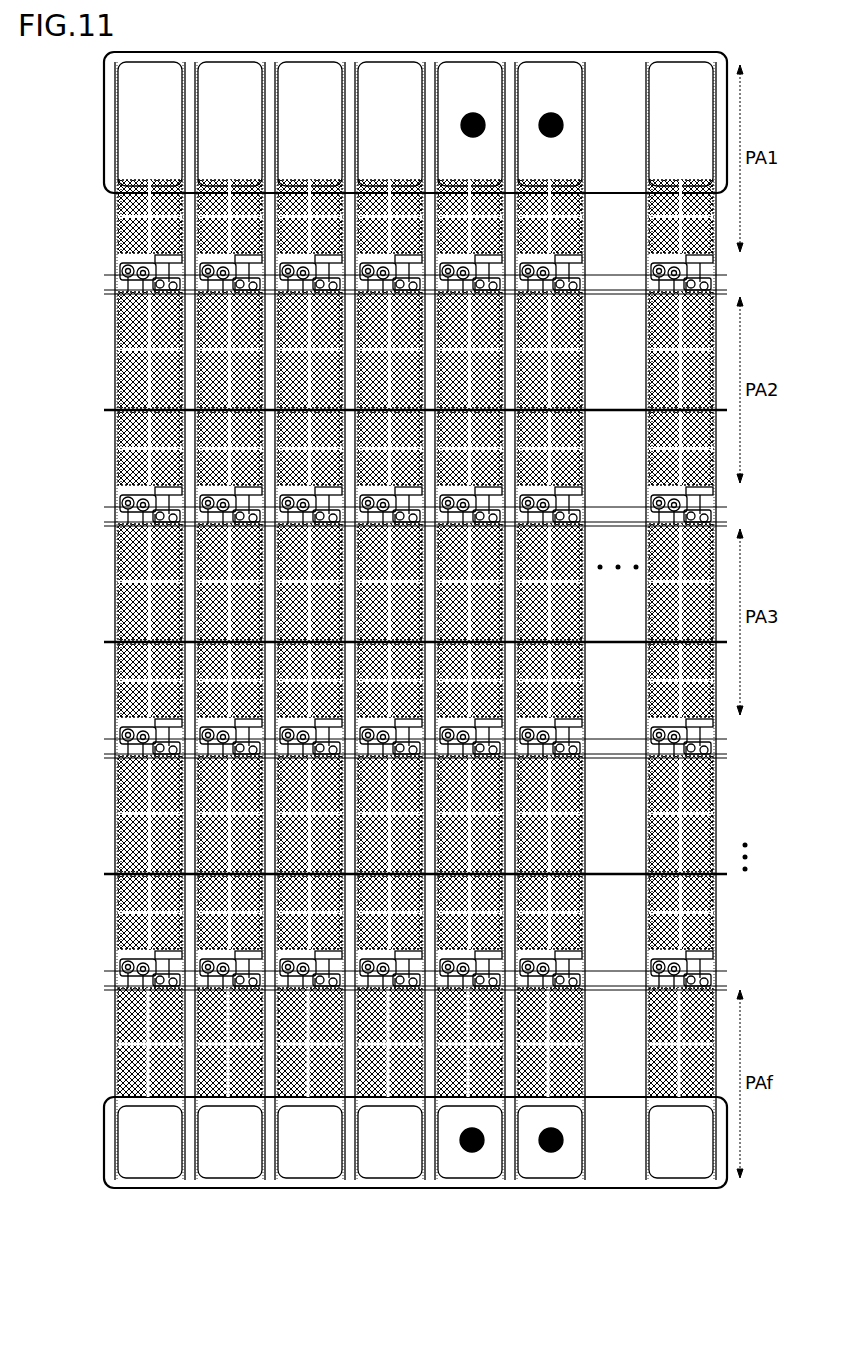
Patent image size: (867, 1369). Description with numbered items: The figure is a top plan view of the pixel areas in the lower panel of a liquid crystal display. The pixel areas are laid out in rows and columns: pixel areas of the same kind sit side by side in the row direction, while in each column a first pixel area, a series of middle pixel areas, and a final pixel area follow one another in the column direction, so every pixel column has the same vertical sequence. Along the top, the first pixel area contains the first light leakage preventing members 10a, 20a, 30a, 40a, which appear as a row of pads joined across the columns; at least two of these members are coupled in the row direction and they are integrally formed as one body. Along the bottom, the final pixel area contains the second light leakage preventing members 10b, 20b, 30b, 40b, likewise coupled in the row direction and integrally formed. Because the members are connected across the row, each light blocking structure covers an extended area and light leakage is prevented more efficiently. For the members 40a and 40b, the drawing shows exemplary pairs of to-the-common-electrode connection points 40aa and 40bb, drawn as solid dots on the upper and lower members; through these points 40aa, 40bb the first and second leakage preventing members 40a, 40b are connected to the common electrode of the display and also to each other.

The first light leakage preventing member 10a is at (289, 101).
The first light leakage preventing member 20a is at (230, 124).
The first light leakage preventing member 30a is at (230, 124).
The first light leakage preventing member 40a is at (237, 88).
The second light leakage preventing member 10b is at (95, 1143).
The second light leakage preventing member 20b is at (150, 1142).
The second light leakage preventing member 30b is at (150, 1142).
The second light leakage preventing member 40b is at (128, 1141).
The to-the-common-electrode connection point 40aa is at (478, 112).
The to-the-common-electrode connection point 40bb is at (474, 1150).